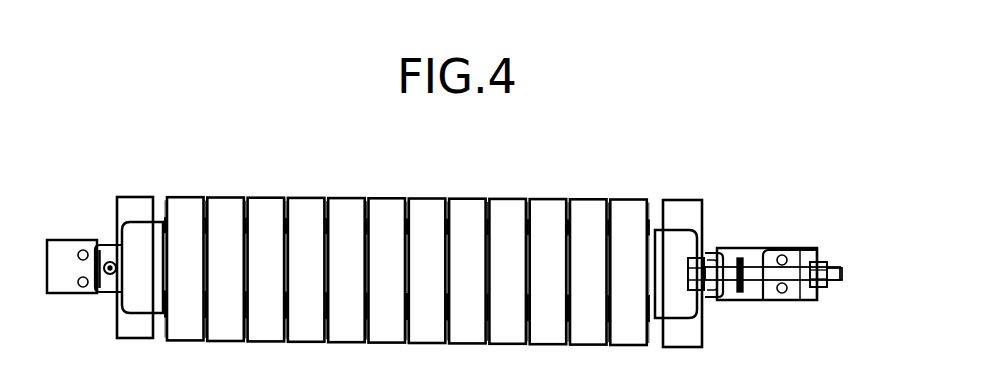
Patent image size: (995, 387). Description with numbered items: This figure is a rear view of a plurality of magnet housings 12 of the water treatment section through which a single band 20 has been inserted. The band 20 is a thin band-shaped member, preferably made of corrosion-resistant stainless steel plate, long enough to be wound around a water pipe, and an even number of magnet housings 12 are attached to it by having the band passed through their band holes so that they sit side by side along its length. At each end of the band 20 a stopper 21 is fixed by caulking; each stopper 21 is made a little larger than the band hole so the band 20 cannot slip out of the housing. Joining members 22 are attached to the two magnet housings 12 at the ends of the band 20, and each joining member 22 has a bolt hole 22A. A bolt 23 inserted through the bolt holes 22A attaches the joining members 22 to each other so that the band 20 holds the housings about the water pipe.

The magnet housing 12 is at (134, 197).
The band 20 is at (738, 247).
The stopper 21 is at (66, 240).
The joining member 22 is at (140, 300).
The bolt hole 22A is at (100, 295).
The bolt 23 is at (755, 285).